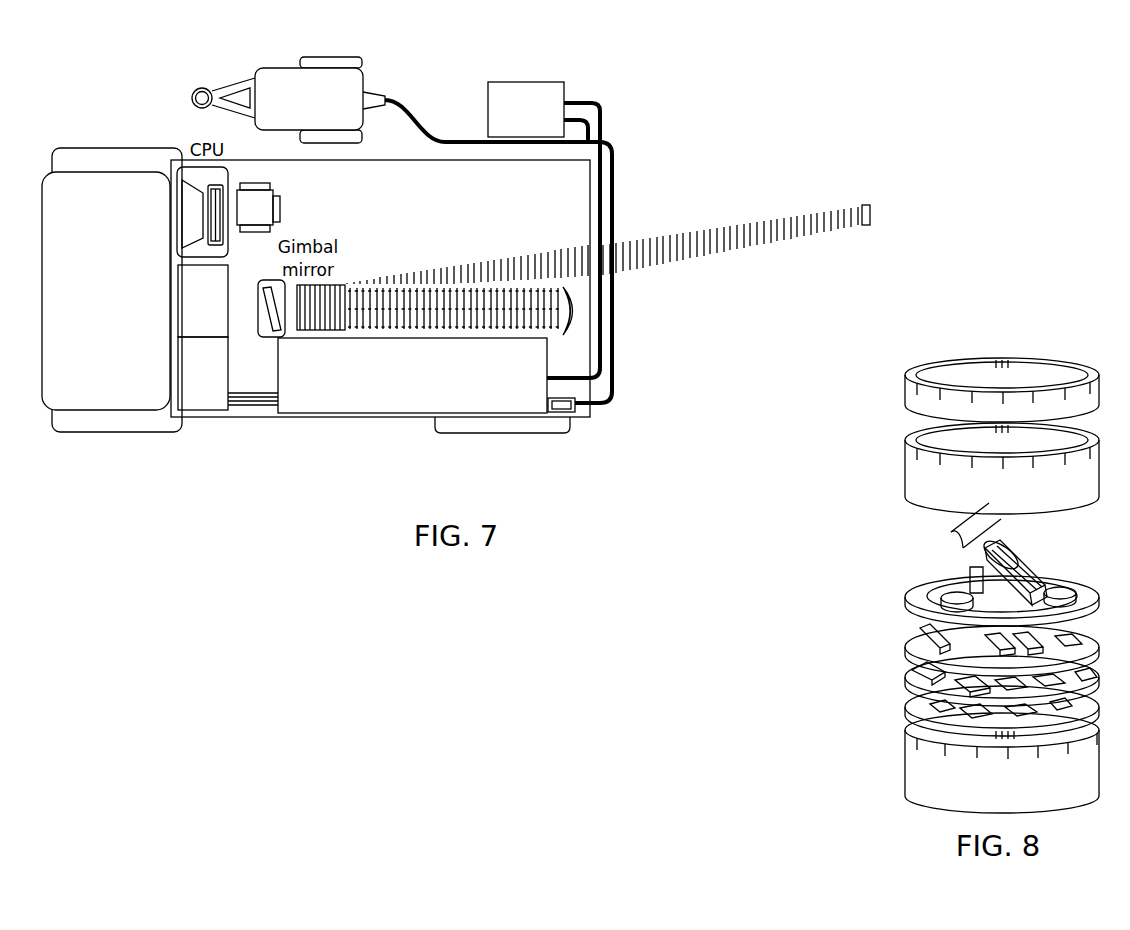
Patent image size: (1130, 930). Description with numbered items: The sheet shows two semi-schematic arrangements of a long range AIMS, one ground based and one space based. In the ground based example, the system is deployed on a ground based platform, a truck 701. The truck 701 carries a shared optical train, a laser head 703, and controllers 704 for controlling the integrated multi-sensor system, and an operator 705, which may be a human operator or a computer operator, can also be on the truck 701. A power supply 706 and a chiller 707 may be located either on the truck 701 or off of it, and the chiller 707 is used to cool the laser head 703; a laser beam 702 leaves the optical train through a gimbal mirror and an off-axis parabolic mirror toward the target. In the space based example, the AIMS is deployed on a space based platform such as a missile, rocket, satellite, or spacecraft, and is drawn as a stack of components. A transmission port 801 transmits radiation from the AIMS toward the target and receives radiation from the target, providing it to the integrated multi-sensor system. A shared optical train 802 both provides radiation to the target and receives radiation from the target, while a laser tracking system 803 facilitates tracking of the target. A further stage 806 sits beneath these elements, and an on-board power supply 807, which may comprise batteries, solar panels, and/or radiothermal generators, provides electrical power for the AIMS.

In FIG. 7, the truck 701 is at (115, 432).
In FIG. 7, the laser beam 702 is at (453, 264).
In FIG. 7, the laser head 703 is at (370, 415).
In FIG. 7, the controllers 704 is at (217, 413).
In FIG. 7, the operator 705 is at (272, 186).
In FIG. 7, the power supply 706 is at (328, 57).
In FIG. 7, the chiller 707 is at (525, 82).
In FIG. 8, the transmission port 801 is at (937, 476).
In FIG. 8, the shared optical train 802 is at (950, 540).
In FIG. 8, the laser tracking system 803 is at (925, 599).
In FIG. 8, the base disc 806 is at (938, 712).
In FIG. 8, the on-board power supply 807 is at (940, 773).